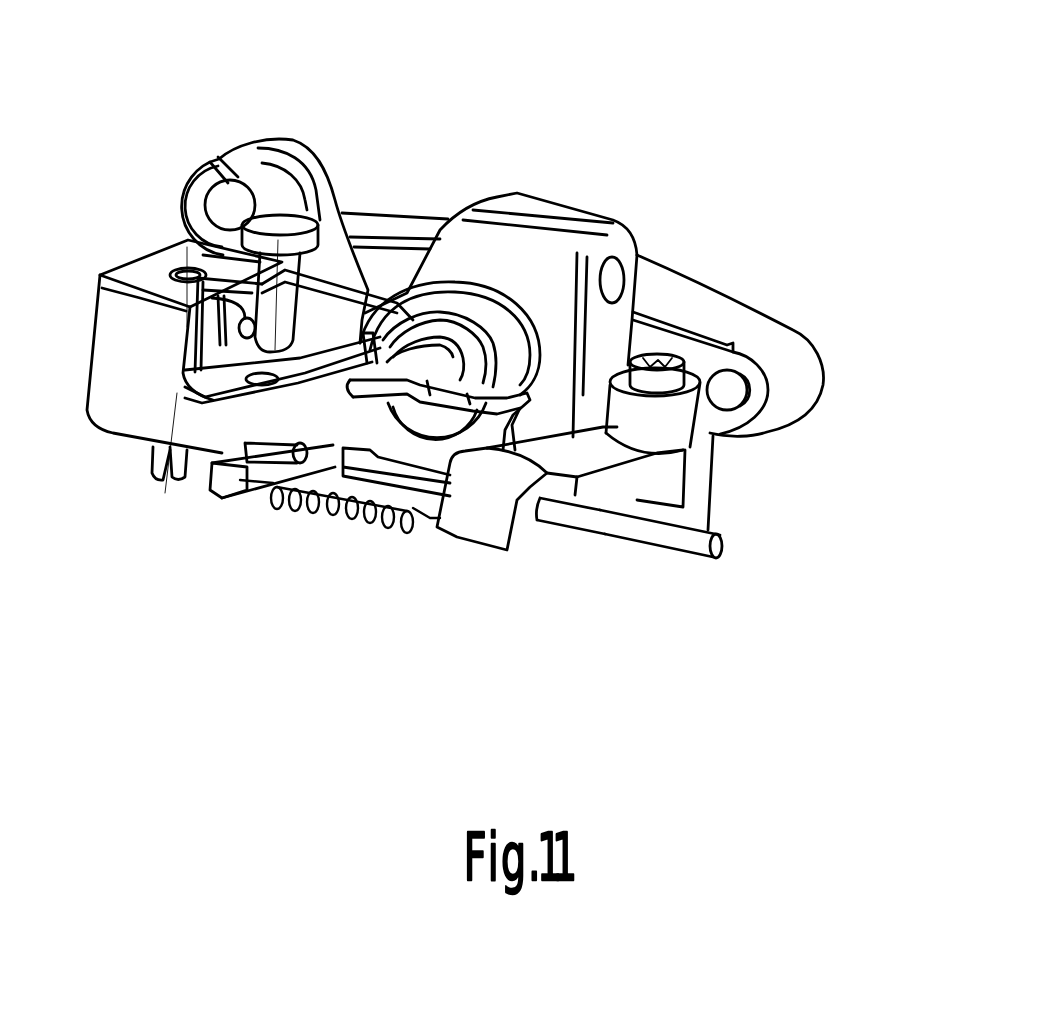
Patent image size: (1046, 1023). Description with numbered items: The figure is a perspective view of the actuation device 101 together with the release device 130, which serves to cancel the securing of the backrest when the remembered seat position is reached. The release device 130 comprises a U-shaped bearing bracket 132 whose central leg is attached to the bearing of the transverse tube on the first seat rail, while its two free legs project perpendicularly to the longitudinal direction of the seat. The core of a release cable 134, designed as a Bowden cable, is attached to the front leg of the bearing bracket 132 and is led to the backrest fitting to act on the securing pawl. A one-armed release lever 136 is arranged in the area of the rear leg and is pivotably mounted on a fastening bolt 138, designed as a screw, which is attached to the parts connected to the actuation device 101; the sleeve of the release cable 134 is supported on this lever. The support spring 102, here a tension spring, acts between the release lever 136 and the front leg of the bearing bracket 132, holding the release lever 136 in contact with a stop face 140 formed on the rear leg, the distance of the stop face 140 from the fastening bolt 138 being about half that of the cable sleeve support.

The actuation device 101 is at (408, 195).
The support spring 102 is at (332, 515).
The release device 130 is at (446, 549).
The bearing bracket 132 is at (327, 410).
The release cable 134 is at (632, 523).
The release lever 136 is at (618, 490).
The fastening bolt 138 is at (662, 383).
The stop face 140 is at (345, 420).